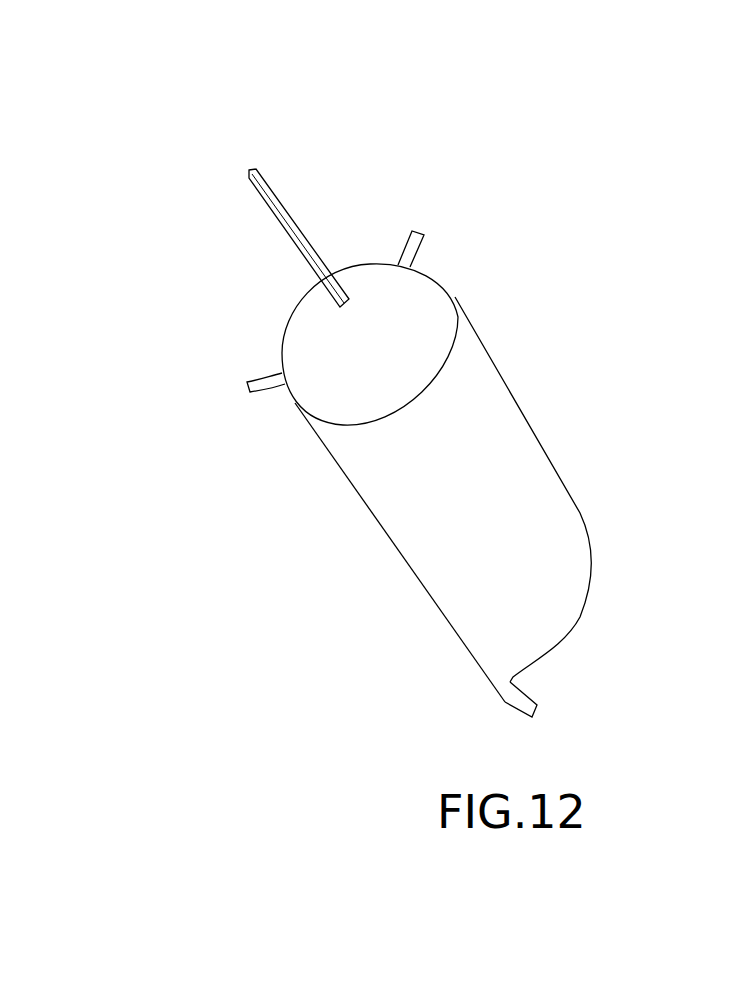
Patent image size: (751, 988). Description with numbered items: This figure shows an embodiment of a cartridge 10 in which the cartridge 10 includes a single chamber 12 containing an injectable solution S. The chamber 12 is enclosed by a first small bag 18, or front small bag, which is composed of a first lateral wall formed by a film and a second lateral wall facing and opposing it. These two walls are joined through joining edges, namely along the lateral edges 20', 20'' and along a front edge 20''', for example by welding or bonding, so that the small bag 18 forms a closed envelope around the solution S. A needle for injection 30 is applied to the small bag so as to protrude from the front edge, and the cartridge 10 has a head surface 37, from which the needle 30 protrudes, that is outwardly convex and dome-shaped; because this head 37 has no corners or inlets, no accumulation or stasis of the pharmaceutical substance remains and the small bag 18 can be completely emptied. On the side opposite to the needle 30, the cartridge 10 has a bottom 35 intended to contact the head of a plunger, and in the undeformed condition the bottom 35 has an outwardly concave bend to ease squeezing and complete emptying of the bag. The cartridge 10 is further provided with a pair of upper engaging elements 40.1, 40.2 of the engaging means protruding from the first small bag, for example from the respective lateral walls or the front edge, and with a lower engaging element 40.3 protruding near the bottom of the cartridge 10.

The cartridge 10 is at (183, 148).
The chamber 12 is at (492, 414).
The first small bag 18 is at (188, 465).
The lateral edge 20' is at (400, 552).
The lateral edge 20'' is at (580, 489).
The front edge 20''' is at (370, 271).
The needle for injection 30 is at (285, 178).
The bottom 35 is at (600, 610).
The head surface 37 is at (310, 335).
The upper engaging element 40.1 is at (245, 383).
The upper engaging element 40.2 is at (415, 246).
The lower engaging element 40.3 is at (545, 707).
The injectable solution S is at (523, 537).